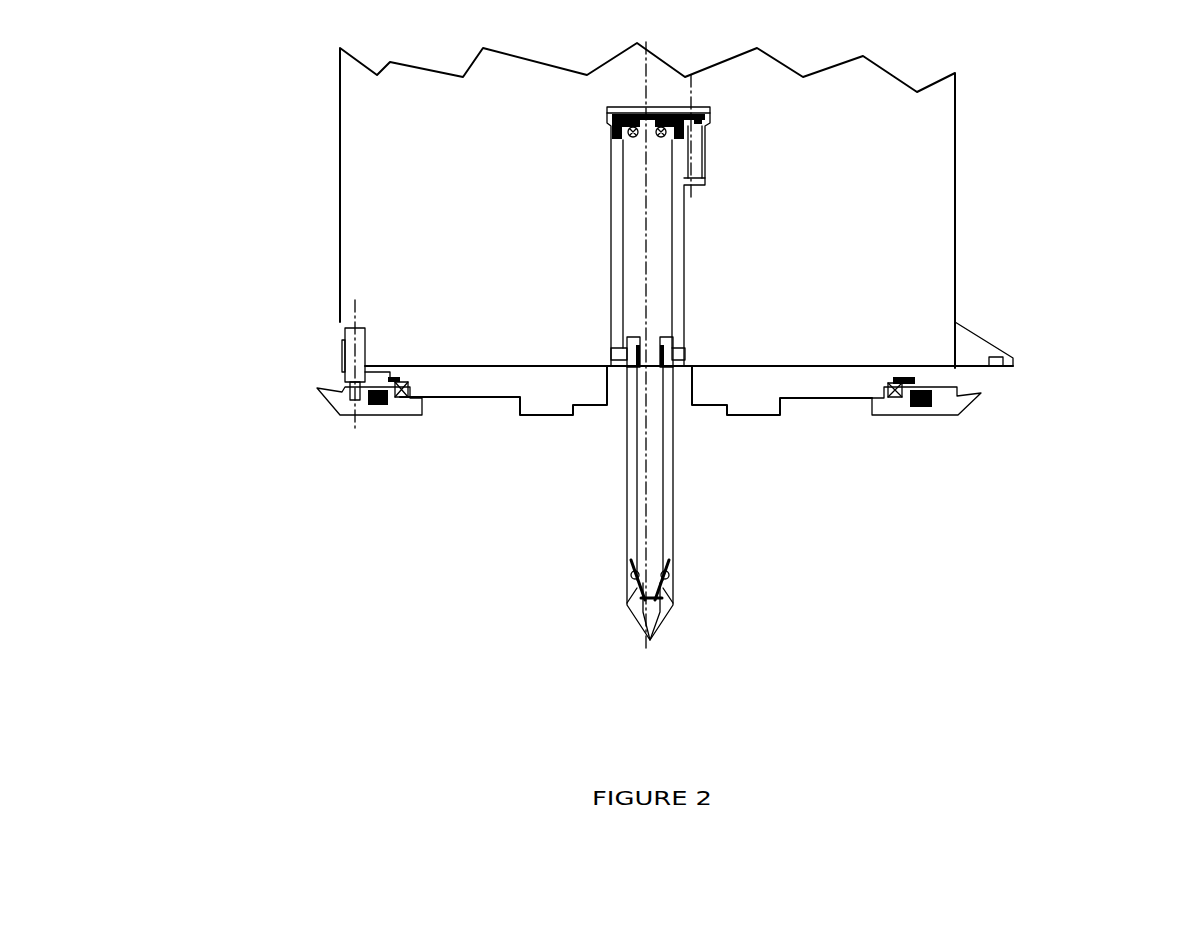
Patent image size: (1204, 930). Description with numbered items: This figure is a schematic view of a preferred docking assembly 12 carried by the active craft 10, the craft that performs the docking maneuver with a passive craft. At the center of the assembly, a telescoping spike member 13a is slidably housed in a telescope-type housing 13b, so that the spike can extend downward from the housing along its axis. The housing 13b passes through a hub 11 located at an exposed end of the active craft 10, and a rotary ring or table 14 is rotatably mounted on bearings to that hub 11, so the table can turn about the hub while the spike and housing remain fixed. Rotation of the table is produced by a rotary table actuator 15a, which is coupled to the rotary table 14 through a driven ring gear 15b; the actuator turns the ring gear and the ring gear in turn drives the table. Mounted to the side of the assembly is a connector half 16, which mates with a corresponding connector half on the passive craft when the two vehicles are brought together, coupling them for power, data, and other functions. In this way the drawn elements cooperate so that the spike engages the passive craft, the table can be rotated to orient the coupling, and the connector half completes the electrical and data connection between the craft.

The active craft 10 is at (957, 123).
The hub 11 is at (790, 390).
The docking assembly 12 is at (306, 257).
The telescoping spike member 13a is at (622, 528).
The telescope-type housing 13b is at (684, 242).
The rotary table 14 is at (927, 419).
The rotary table actuator 15a is at (345, 352).
The driven ring gear 15b is at (375, 404).
The connector half 16 is at (985, 342).